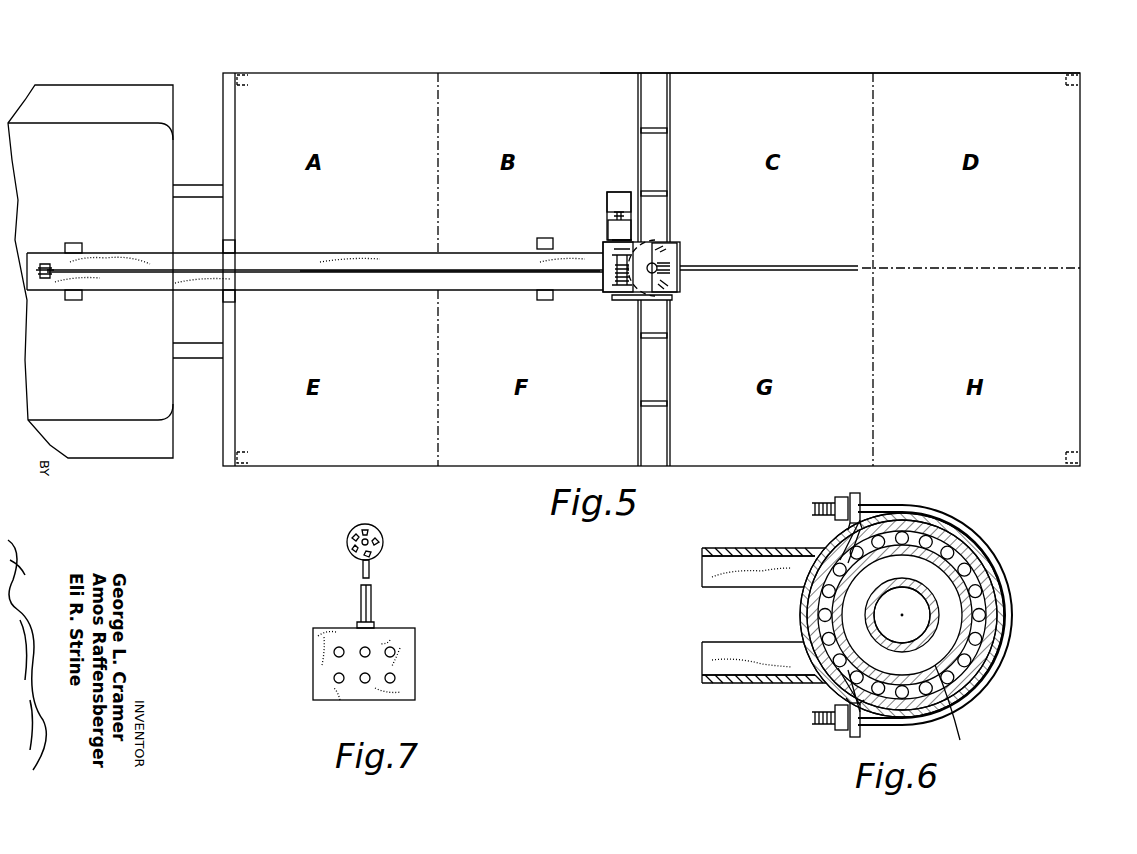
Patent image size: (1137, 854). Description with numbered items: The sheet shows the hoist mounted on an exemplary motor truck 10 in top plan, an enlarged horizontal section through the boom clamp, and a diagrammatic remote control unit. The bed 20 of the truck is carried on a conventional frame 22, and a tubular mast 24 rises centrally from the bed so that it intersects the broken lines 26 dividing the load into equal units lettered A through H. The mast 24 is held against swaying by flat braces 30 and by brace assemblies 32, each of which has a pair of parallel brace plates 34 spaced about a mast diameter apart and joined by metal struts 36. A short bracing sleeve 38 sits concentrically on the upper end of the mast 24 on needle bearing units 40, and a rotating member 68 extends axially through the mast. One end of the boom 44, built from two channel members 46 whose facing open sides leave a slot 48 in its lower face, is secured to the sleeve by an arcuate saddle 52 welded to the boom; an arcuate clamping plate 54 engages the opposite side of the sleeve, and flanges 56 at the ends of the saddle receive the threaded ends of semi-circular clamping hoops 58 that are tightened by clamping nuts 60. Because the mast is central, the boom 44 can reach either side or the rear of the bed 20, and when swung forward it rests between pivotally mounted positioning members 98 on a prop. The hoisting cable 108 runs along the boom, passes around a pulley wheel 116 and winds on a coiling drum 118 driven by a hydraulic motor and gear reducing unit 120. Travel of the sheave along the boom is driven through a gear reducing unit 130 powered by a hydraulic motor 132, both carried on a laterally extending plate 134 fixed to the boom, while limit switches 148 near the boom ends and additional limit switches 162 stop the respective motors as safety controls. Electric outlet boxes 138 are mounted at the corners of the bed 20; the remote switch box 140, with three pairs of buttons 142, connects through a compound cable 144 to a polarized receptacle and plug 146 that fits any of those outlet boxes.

In FIG. 5, the motor truck 10 is at (808, 70).
In FIG. 5, the bed 20 is at (1080, 332).
In FIG. 5, the frame 22 is at (182, 190).
In FIG. 5, the tubular mast 24 is at (652, 242).
In FIG. 6, the tubular mast 24 is at (940, 700).
In FIG. 5, the broken lines 26 is at (440, 140).
In FIG. 5, the braces 30 is at (772, 266).
In FIG. 5, the brace assemblies 32 is at (678, 113).
In FIG. 5, the brace plates 34 is at (640, 121).
In FIG. 5, the metal struts 36 is at (652, 125).
In FIG. 6, the bracing sleeve 38 is at (960, 680).
In FIG. 6, the needle bearing units 40 is at (980, 634).
In FIG. 5, the boom 44 is at (345, 248).
In FIG. 6, the boom 44 is at (708, 542).
In FIG. 6, the channel members 46 is at (740, 558).
In FIG. 6, the slot 48 is at (720, 642).
In FIG. 6, the arcuate saddle 52 is at (840, 540).
In FIG. 6, the clamping plate 54 is at (1004, 585).
In FIG. 6, the flanges 56 is at (858, 494).
In FIG. 6, the clamping bars or hoops 58 is at (932, 515).
In FIG. 6, the clamping nuts 60 is at (842, 496).
In FIG. 6, the rotating member 68 is at (930, 595).
In FIG. 5, the positioning members 98 is at (235, 242).
In FIG. 5, the hoisting cable 108 is at (447, 268).
In FIG. 5, the pulley wheel 116 is at (45, 262).
In FIG. 5, the coiling drum 118 is at (610, 300).
In FIG. 5, the hydraulic motor and gear reducing unit 120 is at (680, 292).
In FIG. 5, the gear reducing unit 130 is at (534, 340).
In FIG. 5, the hydraulic motor 132 is at (618, 192).
In FIG. 5, the laterally extending plate 134 is at (612, 230).
In FIG. 5, the outlet boxes 138 is at (242, 76).
In FIG. 7, the switch box 140 is at (408, 662).
In FIG. 7, the buttons 142 is at (338, 646).
In FIG. 7, the compound cable 144 is at (372, 600).
In FIG. 7, the polarized receptacle and plug 146 is at (378, 527).
In FIG. 5, the limit switches 148 is at (73, 243).
In FIG. 5, the limit switches 162 is at (75, 300).